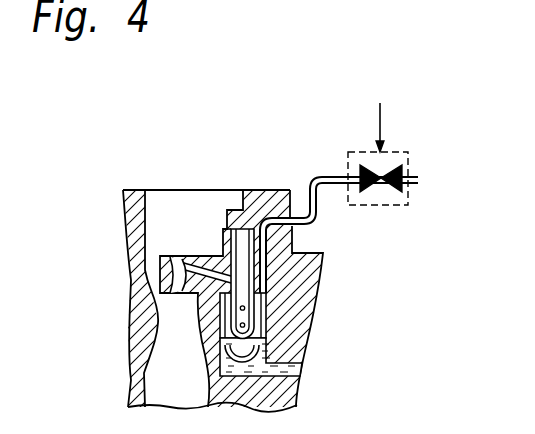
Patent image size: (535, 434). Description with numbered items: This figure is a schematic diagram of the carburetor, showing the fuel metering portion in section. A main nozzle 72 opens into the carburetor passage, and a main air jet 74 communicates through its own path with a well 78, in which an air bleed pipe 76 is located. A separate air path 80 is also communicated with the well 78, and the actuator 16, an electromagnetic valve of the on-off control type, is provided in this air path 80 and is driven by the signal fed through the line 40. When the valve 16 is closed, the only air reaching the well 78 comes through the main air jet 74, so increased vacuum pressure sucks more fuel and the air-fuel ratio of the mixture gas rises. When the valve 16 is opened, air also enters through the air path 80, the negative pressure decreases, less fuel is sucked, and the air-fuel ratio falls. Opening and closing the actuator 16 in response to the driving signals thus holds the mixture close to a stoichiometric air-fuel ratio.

The actuator 16 is at (385, 207).
The line 40 is at (381, 123).
The main nozzle 72 is at (179, 265).
The main air jet 74 is at (223, 231).
The air bleed pipe 76 is at (268, 285).
The well 78 is at (250, 336).
The air path 80 is at (317, 227).